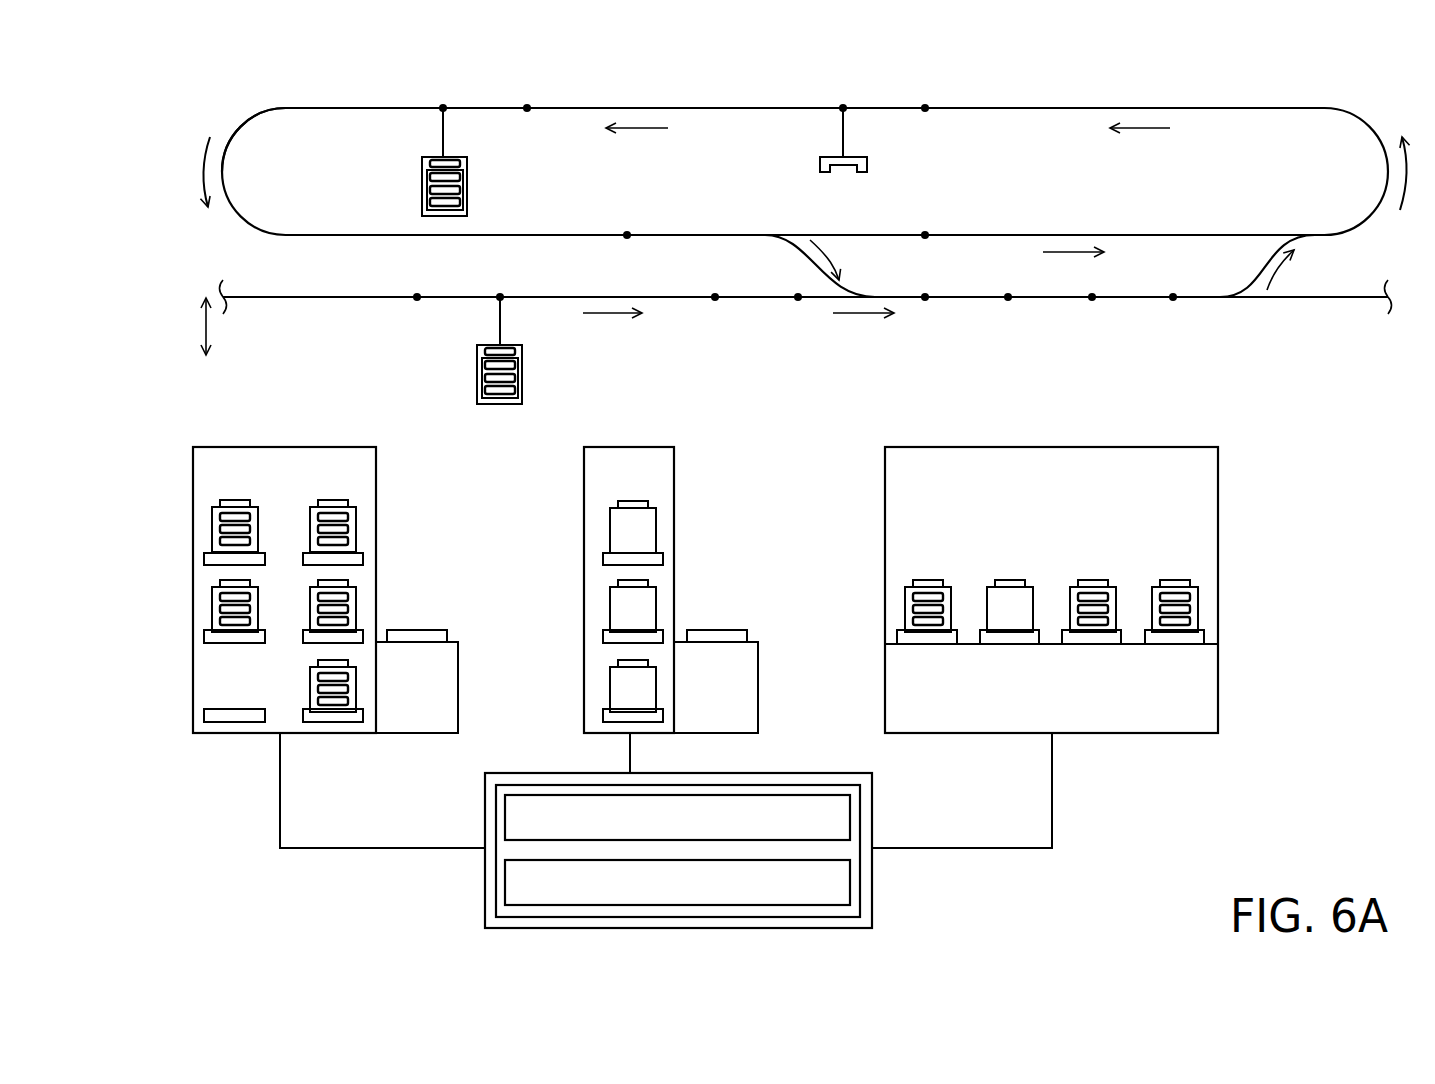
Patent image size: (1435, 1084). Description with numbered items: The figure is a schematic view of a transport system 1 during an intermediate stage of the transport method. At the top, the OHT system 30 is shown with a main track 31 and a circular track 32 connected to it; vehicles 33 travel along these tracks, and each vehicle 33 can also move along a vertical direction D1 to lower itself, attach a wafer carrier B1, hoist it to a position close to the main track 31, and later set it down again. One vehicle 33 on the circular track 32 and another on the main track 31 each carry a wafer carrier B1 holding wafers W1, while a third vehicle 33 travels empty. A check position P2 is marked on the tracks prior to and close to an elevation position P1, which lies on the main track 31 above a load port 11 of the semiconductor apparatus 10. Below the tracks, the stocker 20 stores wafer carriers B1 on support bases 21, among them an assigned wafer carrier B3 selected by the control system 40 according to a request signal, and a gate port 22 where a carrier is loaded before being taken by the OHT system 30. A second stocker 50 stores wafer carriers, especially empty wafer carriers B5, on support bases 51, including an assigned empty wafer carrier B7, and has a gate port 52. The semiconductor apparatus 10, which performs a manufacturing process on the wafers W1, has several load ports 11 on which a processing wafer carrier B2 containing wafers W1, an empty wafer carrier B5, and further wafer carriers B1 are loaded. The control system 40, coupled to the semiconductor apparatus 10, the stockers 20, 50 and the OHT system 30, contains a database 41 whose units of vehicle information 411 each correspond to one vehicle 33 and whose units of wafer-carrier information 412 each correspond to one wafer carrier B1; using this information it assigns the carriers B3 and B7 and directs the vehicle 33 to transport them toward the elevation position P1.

The transport system 1 is at (1390, 118).
The semiconductor apparatus 10 is at (1224, 433).
The load port 11 is at (905, 638).
The stocker 20 is at (188, 431).
The support base 21 is at (215, 560).
The gate port 22 is at (428, 640).
The OHT system 30 is at (230, 121).
The main track 31 is at (255, 297).
The circular track 32 is at (245, 233).
The vehicle 33 is at (471, 156).
The control system 40 is at (468, 782).
The database 41 is at (496, 872).
The vehicle information 411 is at (852, 808).
The wafer-carrier information 412 is at (852, 872).
The stocker 50 is at (629, 431).
The support base 51 is at (615, 560).
The gate port 52 is at (727, 640).
The wafer carrier B1 is at (418, 172).
The processing wafer carrier B2 is at (902, 590).
The assigned wafer carrier B3 is at (210, 513).
The empty wafer carrier B5 is at (606, 673).
The assigned empty wafer carrier B7 is at (606, 514).
The wafer W1 is at (430, 200).
The elevation position P1 is at (927, 286).
The check position P2 is at (629, 226).
The vertical direction D1 is at (205, 325).